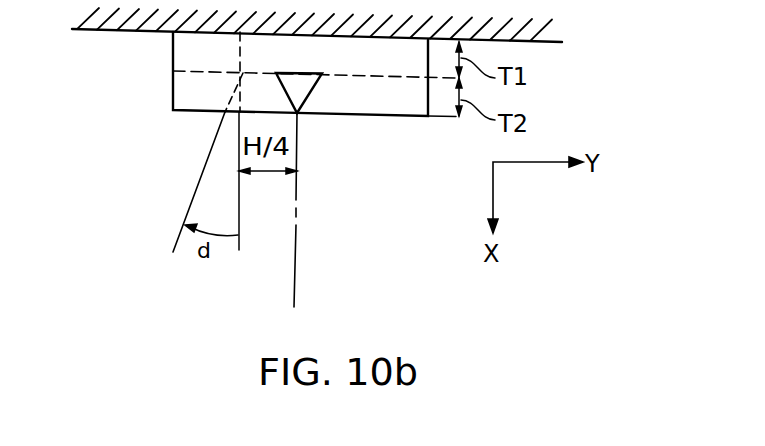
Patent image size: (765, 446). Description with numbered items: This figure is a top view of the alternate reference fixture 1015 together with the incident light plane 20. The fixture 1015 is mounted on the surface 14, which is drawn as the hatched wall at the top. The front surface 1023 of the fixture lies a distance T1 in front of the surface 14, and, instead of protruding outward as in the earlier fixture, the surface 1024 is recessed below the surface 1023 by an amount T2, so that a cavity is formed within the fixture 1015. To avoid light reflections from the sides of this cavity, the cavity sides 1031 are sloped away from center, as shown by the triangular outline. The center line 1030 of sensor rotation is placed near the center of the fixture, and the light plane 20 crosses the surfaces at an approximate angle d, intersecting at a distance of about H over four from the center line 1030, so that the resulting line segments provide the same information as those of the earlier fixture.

The surface 14 is at (114, 31).
The surface 1023 is at (190, 113).
The surface 1024 is at (370, 78).
The cavity sides 1031 is at (312, 92).
The fixture 1015 is at (377, 120).
The center line 1030 is at (296, 249).
The light plane 20 is at (192, 198).